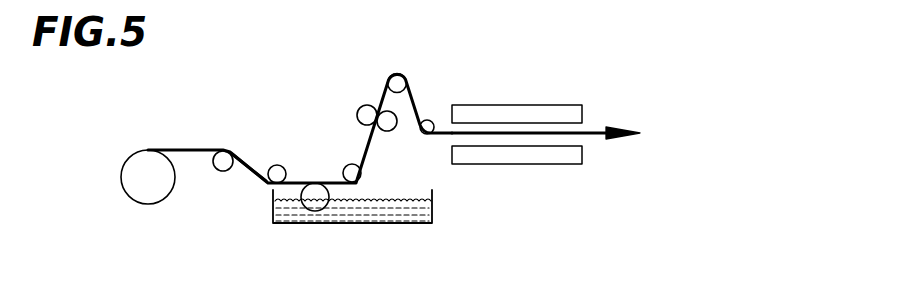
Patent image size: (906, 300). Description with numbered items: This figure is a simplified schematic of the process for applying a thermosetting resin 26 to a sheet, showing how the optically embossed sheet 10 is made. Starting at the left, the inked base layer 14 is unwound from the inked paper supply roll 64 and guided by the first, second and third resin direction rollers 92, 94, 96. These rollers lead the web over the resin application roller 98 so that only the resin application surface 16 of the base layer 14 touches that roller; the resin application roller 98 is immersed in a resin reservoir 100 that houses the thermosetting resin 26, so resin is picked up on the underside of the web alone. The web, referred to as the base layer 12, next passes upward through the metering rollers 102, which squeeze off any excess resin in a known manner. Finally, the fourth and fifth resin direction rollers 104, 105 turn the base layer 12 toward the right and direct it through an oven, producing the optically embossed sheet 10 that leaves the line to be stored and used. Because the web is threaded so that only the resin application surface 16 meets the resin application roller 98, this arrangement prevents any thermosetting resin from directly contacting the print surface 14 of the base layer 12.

The optically embossed sheet 10 is at (594, 130).
The base layer 12 is at (148, 124).
The inked base layer 14 is at (191, 148).
The resin application surface 16 is at (246, 178).
The thermosetting resin 26 is at (400, 209).
The inked paper supply roll 64 is at (147, 188).
The first resin direction roller 92 is at (227, 171).
The second resin direction roller 94 is at (279, 164).
The third resin direction roller 96 is at (350, 163).
The resin application roller 98 is at (303, 185).
The resin reservoir 100 is at (350, 225).
The metering rollers 102 is at (368, 104).
The fourth resin direction roller 104 is at (401, 76).
The fifth resin direction roller 105 is at (422, 135).